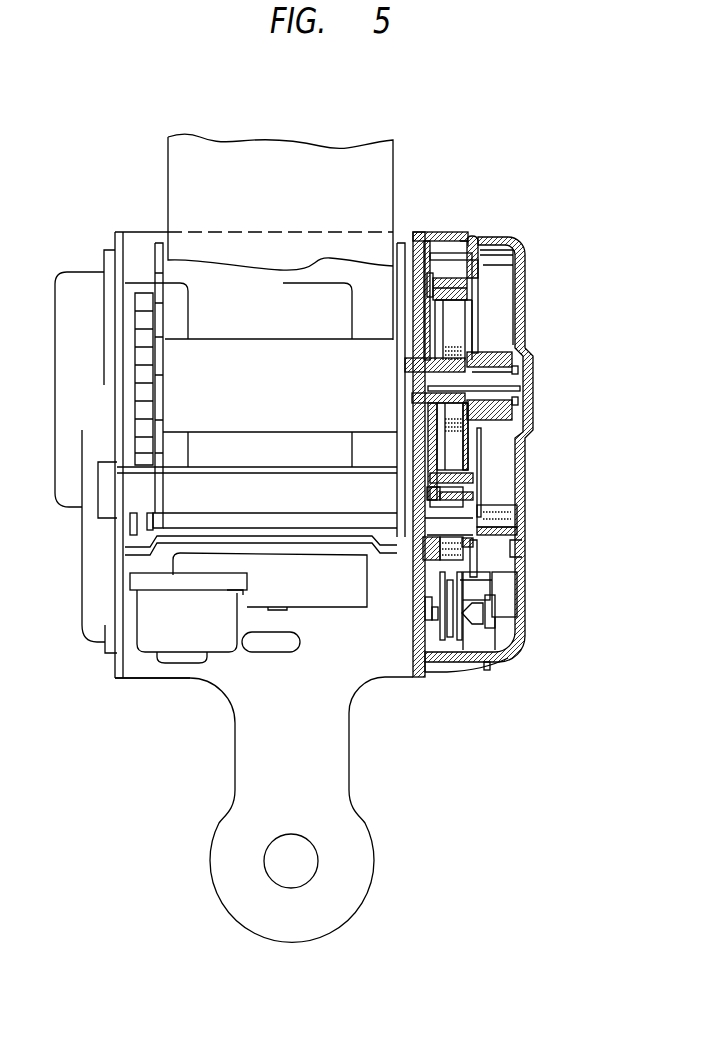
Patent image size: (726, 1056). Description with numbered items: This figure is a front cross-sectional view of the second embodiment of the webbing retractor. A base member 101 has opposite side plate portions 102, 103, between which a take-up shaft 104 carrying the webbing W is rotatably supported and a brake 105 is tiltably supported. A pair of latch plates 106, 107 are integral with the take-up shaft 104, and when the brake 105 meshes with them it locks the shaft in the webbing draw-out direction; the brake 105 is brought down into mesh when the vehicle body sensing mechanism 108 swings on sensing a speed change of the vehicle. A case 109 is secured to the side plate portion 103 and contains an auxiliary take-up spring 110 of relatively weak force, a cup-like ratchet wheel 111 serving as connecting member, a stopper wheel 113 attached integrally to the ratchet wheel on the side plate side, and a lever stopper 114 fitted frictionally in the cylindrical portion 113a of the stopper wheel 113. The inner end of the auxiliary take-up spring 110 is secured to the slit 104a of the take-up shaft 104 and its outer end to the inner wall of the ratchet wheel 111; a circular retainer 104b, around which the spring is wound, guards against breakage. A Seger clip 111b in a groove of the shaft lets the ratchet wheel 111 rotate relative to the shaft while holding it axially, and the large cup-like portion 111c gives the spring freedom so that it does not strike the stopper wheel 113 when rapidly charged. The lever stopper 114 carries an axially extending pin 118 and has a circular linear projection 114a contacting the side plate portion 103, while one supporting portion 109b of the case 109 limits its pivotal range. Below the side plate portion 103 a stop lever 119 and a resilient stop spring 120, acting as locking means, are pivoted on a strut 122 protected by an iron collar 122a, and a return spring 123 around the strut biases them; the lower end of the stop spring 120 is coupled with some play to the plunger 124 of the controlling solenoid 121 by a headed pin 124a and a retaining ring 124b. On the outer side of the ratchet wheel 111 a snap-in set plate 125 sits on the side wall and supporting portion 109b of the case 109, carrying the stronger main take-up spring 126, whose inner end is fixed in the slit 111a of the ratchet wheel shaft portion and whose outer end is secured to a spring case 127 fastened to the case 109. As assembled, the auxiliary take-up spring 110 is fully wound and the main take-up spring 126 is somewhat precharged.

The webbing W is at (212, 155).
The base member 101 is at (360, 760).
The side plate portion 102 is at (120, 233).
The side plate portion 103 is at (418, 232).
The take-up shaft 104 is at (430, 400).
The slit 104a is at (432, 388).
The circular retainer 104b is at (480, 328).
The brake 105 is at (380, 533).
The latch plate 106 is at (157, 243).
The latch plate 107 is at (400, 243).
The vehicle body sensing mechanism 108 is at (143, 668).
The case 109 is at (437, 252).
The supporting portion 109b is at (465, 235).
The auxiliary take-up spring 110 is at (460, 428).
The ratchet wheel 111 is at (503, 417).
The slit 111a is at (492, 353).
The Seger clip 111b is at (517, 368).
The cup-like portion 111c is at (437, 438).
The stopper wheel 113 is at (478, 483).
The cylindrical portion 113a is at (430, 476).
The lever stopper 114 is at (430, 497).
The circular linear projection 114a is at (427, 283).
The pin 118 is at (477, 510).
The stop lever 119 is at (432, 542).
The stop spring 120 is at (463, 592).
The solenoid 121 is at (490, 637).
The strut 122 is at (470, 548).
The iron collar 122a is at (448, 592).
The return spring 123 is at (438, 580).
The plunger 124 is at (453, 673).
The headed pin 124a is at (452, 628).
The retaining ring 124b is at (490, 667).
The set plate 125 is at (473, 240).
The main take-up spring 126 is at (505, 258).
The spring case 127 is at (530, 248).